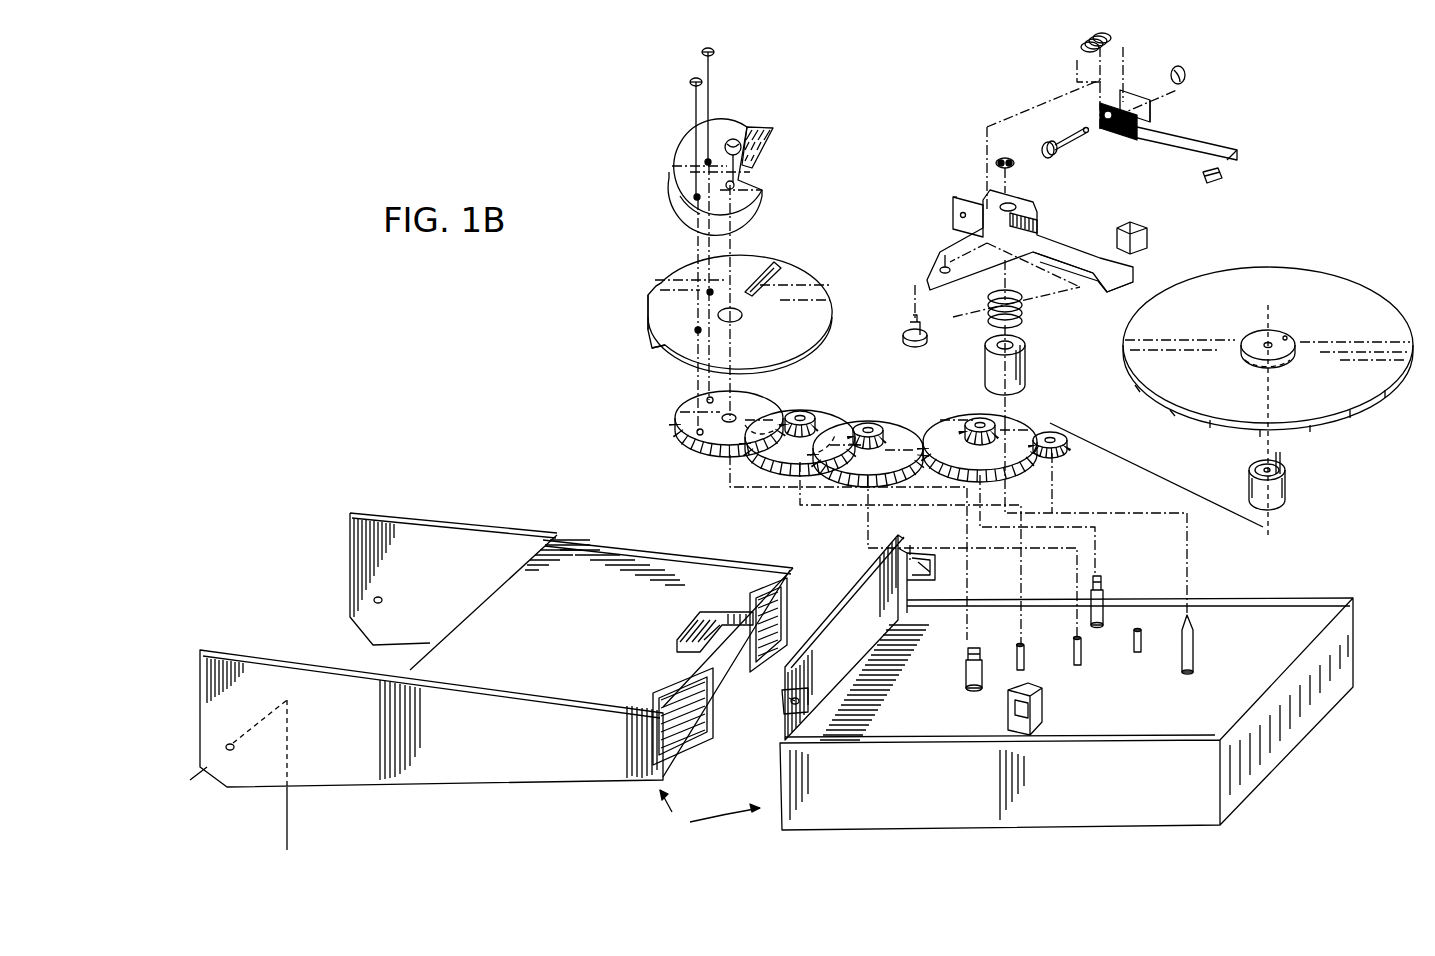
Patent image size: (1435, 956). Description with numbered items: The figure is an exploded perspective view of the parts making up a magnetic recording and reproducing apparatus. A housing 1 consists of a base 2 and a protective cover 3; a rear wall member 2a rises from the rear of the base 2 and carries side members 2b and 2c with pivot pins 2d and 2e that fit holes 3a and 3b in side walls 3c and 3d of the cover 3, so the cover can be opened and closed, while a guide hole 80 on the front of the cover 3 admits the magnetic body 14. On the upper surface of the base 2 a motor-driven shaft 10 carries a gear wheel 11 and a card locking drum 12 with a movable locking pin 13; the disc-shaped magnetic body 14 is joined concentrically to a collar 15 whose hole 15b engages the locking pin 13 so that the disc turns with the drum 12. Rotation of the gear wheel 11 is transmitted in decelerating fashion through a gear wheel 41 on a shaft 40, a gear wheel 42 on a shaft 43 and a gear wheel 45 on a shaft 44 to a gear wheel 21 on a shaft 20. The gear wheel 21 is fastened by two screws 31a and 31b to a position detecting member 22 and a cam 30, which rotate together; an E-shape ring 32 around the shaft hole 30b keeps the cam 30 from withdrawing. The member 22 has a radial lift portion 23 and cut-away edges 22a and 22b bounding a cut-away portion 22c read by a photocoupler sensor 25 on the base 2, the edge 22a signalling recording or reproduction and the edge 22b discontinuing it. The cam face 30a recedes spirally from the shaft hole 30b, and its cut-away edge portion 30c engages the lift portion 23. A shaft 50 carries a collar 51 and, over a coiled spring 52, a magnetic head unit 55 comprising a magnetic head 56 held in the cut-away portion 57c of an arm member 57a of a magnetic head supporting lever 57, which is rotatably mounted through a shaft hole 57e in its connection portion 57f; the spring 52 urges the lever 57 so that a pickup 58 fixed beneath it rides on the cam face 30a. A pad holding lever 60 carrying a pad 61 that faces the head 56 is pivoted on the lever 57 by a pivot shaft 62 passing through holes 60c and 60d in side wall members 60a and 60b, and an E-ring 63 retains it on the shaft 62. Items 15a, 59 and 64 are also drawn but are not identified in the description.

The housing 1 is at (686, 832).
The base 2 is at (1039, 662).
The rear wall member 2a is at (835, 598).
The side member 2b is at (780, 701).
The side member 2c is at (926, 555).
The pivot pin 2d is at (790, 708).
The pivot pin 2e is at (935, 566).
The protective cover 3 is at (491, 666).
The hole 3a is at (230, 741).
The hole 3b is at (383, 595).
The side wall 3c is at (338, 781).
The side wall 3d is at (460, 534).
The shaft 10 is at (1193, 648).
The gear wheel 11 is at (1065, 444).
The card locking drum 12 is at (1284, 498).
The movable locking pin 13 is at (1281, 463).
The magnetic body 14 is at (1268, 385).
The collar 15 is at (1266, 420).
The hub flange 15a is at (1247, 353).
The hole 15b is at (1283, 330).
The shaft 20 is at (966, 663).
The gear wheel 21 is at (677, 418).
The position detecting member 22 is at (701, 308).
The cut-away edge 22a is at (648, 283).
The cut-away edge 22b is at (653, 346).
The cut-away portion 22c is at (643, 318).
The lift portion 23 is at (770, 258).
The sensor 25 is at (1015, 726).
The cam 30 is at (720, 179).
The cam face 30a is at (688, 214).
The shaft hole 30b is at (737, 183).
The cut-away edge portion 30c is at (766, 138).
The screw 31a is at (702, 50).
The screw 31b is at (690, 82).
The E-shape ring 32 is at (734, 138).
The shaft 40 is at (1138, 650).
The gear wheel 41 is at (945, 426).
The gear wheel 42 is at (868, 421).
The shaft 43 is at (1078, 663).
The shaft 44 is at (1024, 663).
The gear wheel 45 is at (810, 410).
The shaft 50 is at (1095, 623).
The collar 51 is at (1024, 368).
The coiled spring 52 is at (1020, 318).
The magnetic head unit 55 is at (1126, 226).
The magnetic head 56 is at (1147, 233).
The magnetic head supporting lever 57 is at (1058, 238).
The arm member 57a is at (1073, 280).
The cut-away portion 57c is at (1113, 275).
The shaft hole 57e is at (1033, 210).
The connection portion 57f is at (995, 204).
The pickup 58 is at (904, 335).
The retainer 59 is at (1005, 158).
The pad holding lever 60 is at (1186, 115).
The side wall member 60a is at (1140, 135).
The side wall member 60b is at (1168, 101).
The hole 60c is at (1108, 135).
The hole 60d is at (1128, 88).
The pad 61 is at (1218, 179).
The pivot shaft 62 is at (1068, 130).
The E-ring 63 is at (1185, 69).
The spring 64 is at (1082, 44).
The guide hole 80 is at (700, 658).